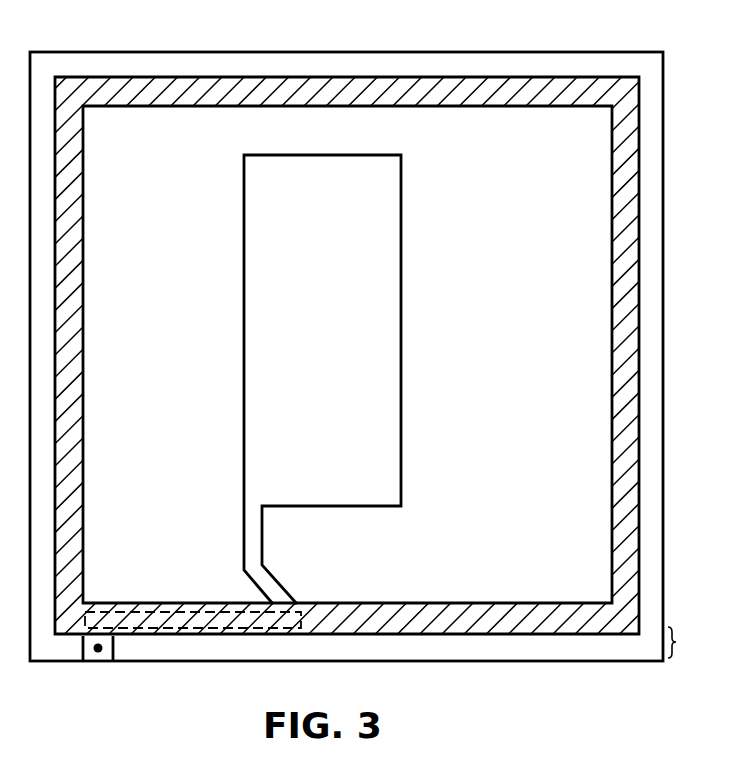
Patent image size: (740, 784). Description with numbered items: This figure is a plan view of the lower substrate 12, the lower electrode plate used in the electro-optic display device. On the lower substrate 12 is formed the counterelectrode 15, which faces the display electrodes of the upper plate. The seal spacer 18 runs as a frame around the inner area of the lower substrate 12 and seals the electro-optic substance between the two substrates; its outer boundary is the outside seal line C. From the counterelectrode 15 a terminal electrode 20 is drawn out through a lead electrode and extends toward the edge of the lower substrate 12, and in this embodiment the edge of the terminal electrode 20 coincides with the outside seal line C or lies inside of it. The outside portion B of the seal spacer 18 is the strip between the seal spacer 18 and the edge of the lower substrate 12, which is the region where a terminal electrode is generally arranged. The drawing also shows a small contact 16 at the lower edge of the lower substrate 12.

The lower substrate 12 is at (607, 53).
The counterelectrode 15 is at (392, 177).
The slot with contact 16 is at (100, 655).
The seal spacer 18 is at (75, 490).
The terminal electrode 20 is at (155, 605).
The outside portion of the seal spacer B is at (683, 643).
The outside seal line C is at (468, 634).